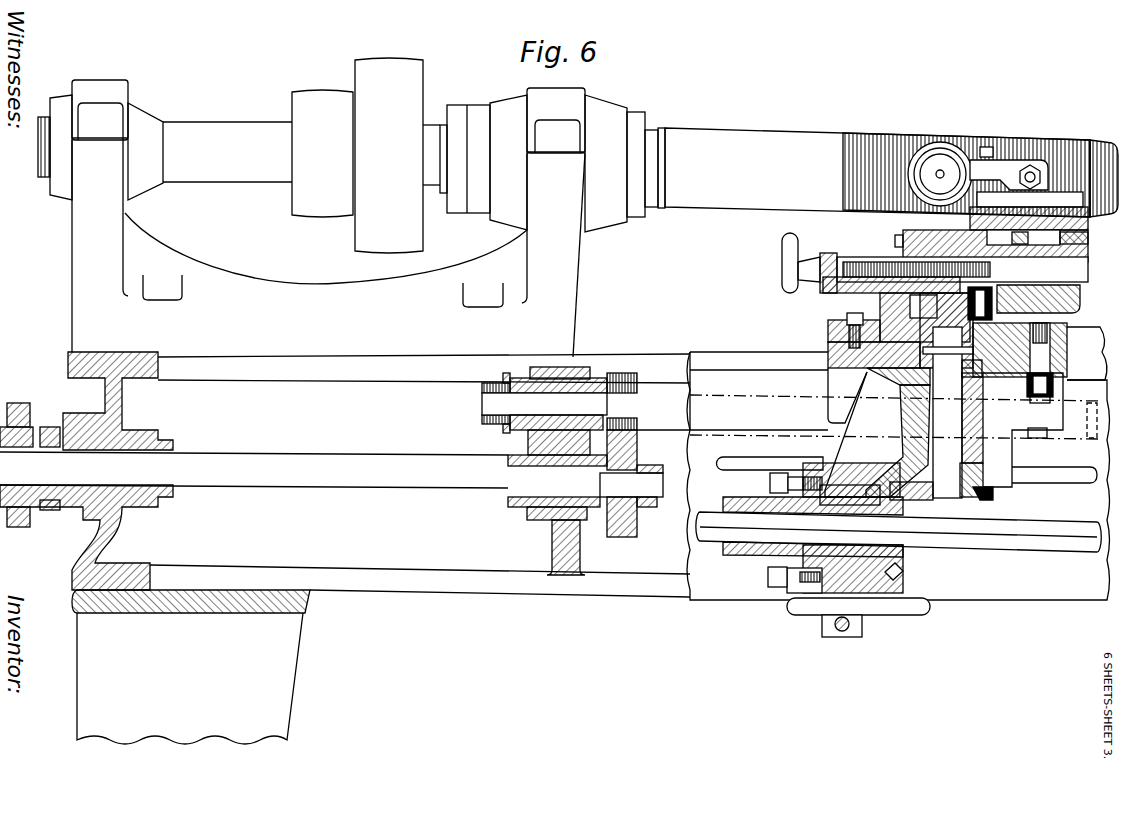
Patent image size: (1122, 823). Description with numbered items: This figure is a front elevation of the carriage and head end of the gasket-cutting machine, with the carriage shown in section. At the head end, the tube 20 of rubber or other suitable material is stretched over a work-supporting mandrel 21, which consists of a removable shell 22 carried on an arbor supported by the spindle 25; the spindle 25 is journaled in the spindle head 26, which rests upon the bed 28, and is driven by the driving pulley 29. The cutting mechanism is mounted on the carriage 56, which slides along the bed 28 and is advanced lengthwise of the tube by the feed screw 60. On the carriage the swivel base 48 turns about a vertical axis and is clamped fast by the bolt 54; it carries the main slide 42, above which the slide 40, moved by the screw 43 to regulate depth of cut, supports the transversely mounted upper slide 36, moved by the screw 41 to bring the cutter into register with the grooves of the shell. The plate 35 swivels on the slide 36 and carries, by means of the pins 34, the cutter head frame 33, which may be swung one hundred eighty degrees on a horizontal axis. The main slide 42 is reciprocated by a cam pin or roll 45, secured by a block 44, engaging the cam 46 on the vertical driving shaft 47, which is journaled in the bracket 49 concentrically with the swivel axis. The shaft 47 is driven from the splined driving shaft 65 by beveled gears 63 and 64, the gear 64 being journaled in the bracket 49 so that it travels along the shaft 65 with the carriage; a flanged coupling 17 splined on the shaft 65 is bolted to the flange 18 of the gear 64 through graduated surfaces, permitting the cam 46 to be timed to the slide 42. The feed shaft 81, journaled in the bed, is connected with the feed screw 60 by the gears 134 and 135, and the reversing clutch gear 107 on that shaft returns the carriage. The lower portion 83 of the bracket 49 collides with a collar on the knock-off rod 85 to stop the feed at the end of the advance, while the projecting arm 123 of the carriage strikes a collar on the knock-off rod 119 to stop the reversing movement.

The flanged coupling 17 is at (732, 555).
The flange of the gear 18 is at (808, 592).
The tube 20 is at (891, 172).
The work-supporting mandrel 21 is at (659, 128).
The shell 22 is at (665, 128).
The spindle 25 is at (341, 163).
The spindle head 26 is at (328, 218).
The bed 28 is at (458, 590).
The driving pulley 29 is at (357, 155).
The cutter head frame 33 is at (1003, 170).
The pins 34 is at (1025, 172).
The plate 35 is at (1042, 195).
The upper slide 36 is at (973, 213).
The slide 40 is at (903, 247).
The screw 41 is at (1085, 236).
The main slide 42 is at (837, 293).
The screw 43 is at (985, 272).
The block 44 is at (813, 277).
The cam pin or roll 45 is at (823, 297).
The cam 46 is at (830, 337).
The vertical driving shaft 47 is at (948, 412).
The swivel base 48 is at (1082, 302).
The bracket 49 is at (876, 436).
The bolt 54 is at (1052, 360).
The carriage 56 is at (1073, 342).
The feed screw 60 is at (650, 405).
The beveled gear 63 is at (983, 490).
The beveled gear 64 is at (895, 578).
The splined driving shaft 65 is at (1018, 543).
The feed shaft 81 is at (254, 470).
The lower portion of the bracket 83 is at (840, 637).
The knock-off rod 85 is at (880, 607).
The reversing clutch gear 107 is at (43, 428).
The knock-off rod 119 is at (767, 455).
The projecting arm of the carriage 123 is at (997, 445).
The gear 134 is at (620, 530).
The gear 135 is at (617, 380).